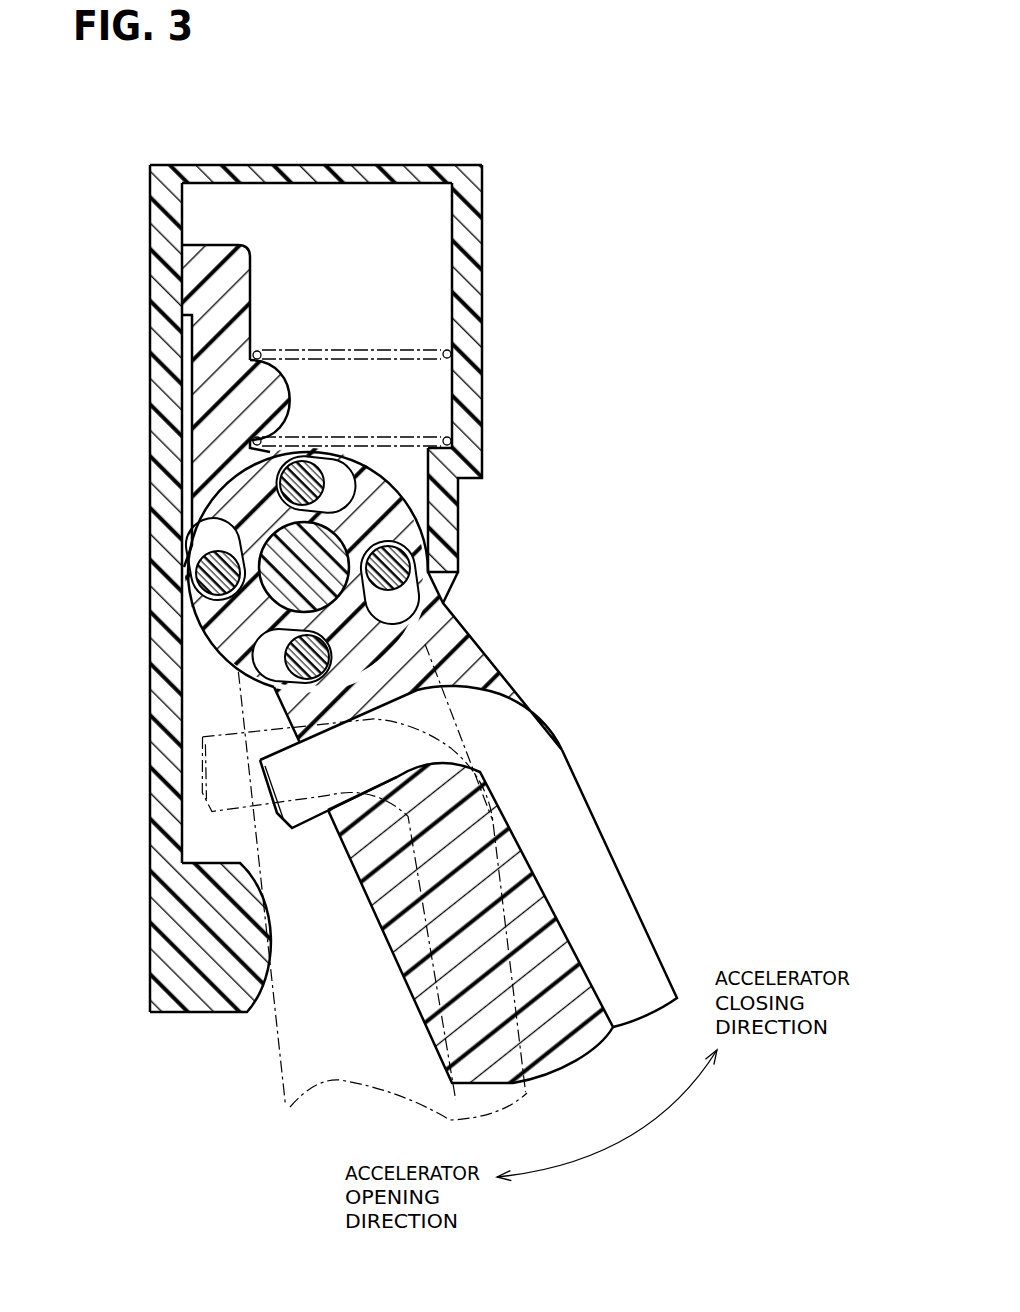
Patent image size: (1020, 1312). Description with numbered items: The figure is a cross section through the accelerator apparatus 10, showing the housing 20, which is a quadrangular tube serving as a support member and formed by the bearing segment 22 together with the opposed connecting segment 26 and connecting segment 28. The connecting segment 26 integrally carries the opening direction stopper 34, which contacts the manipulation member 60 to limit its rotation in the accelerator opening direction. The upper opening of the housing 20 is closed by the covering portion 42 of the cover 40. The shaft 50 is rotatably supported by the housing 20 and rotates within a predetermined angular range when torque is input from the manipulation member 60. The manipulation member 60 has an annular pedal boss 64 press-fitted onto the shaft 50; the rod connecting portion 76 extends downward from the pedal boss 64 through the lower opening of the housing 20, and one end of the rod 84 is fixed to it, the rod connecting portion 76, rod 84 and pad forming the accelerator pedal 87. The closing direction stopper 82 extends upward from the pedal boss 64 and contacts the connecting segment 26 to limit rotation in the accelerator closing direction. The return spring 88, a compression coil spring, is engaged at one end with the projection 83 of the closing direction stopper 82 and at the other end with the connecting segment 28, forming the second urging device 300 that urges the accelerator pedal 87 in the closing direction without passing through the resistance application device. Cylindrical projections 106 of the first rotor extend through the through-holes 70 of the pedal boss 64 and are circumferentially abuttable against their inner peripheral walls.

The accelerator apparatus 10 is at (143, 125).
The housing 20 is at (148, 862).
The bearing segment 22 is at (197, 821).
The connecting segment 26 is at (165, 328).
The connecting segment 28 is at (468, 383).
The opening direction stopper 34 is at (228, 983).
The cover 40 is at (242, 165).
The covering portion 42 is at (393, 165).
The shaft 50 is at (287, 597).
The manipulation member 60 is at (573, 758).
The pedal boss 64 is at (400, 523).
The through-holes 70 is at (315, 476).
The rod connecting portion 76 is at (383, 912).
The closing direction stopper 82 is at (208, 375).
The projection 83 is at (278, 395).
The rod 84 is at (647, 967).
The accelerator pedal 87 is at (440, 1057).
The return spring 88 is at (417, 347).
The projections 106 is at (340, 508).
The second urging device 300 is at (526, 378).